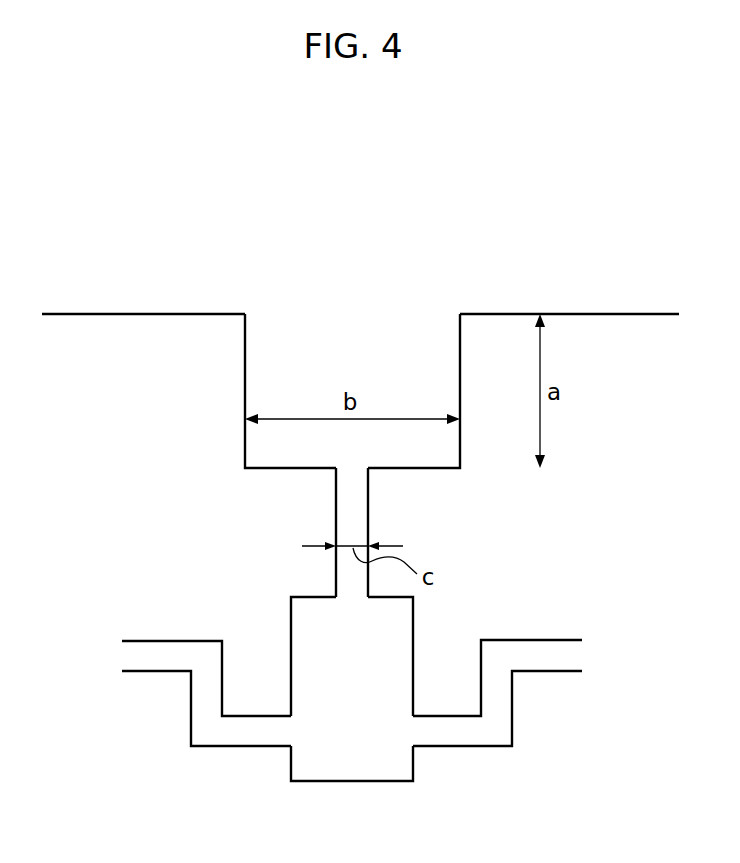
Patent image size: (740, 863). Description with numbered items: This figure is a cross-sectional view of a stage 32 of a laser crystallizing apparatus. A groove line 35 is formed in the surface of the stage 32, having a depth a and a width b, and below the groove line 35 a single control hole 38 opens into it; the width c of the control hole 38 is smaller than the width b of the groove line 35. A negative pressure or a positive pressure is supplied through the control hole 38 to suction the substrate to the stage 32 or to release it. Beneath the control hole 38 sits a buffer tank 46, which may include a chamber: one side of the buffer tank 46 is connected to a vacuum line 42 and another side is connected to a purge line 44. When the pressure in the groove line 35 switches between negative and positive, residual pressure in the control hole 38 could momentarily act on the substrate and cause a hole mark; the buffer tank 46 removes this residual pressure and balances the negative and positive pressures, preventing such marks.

The stage 32 is at (615, 338).
The groove line 35 is at (409, 352).
The control hole 38 is at (353, 469).
The vacuum line 42 is at (197, 713).
The purge line 44 is at (507, 718).
The buffer tank 46 is at (355, 767).